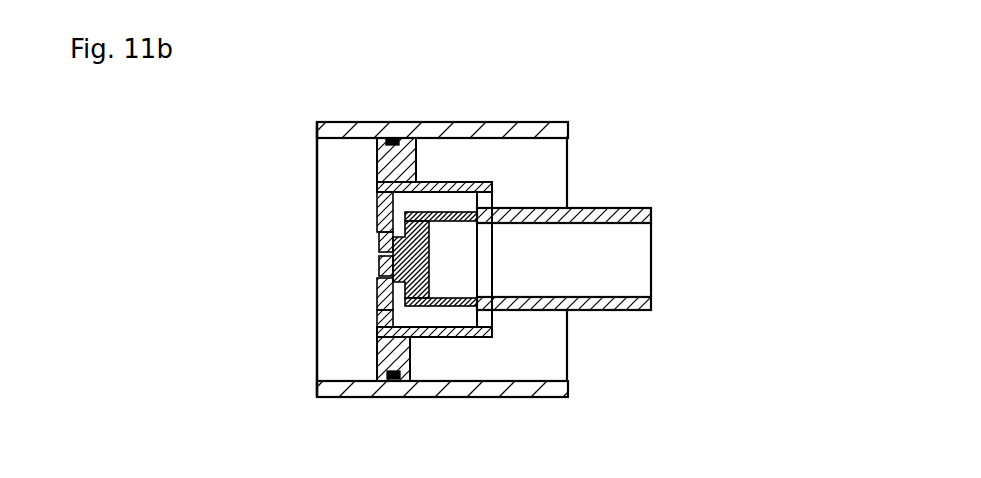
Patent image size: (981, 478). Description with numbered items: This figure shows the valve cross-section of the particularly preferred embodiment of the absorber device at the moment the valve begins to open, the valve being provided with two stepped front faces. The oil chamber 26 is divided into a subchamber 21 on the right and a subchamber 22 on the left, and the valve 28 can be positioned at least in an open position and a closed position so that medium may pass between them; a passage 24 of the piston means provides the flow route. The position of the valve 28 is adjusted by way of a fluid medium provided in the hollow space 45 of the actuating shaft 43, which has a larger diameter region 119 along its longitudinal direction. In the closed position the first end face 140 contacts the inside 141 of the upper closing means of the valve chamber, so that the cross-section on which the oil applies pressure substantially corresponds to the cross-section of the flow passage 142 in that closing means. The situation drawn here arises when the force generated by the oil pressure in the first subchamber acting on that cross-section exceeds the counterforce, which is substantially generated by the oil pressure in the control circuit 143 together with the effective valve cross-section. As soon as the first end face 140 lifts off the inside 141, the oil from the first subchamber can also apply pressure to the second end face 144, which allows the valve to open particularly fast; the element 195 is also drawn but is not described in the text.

The subchamber 21 is at (528, 152).
The subchamber 22 is at (357, 160).
The passage 24 is at (410, 213).
The oil chamber 26 is at (477, 133).
The valve 28 is at (388, 145).
The actuating shaft 43 is at (608, 310).
The hollow space 45 is at (628, 248).
The larger diameter region 119 is at (470, 338).
The first end face 140 is at (376, 210).
The inside of upper closing means 141 is at (383, 298).
The flow passage 142 is at (383, 255).
The control circuit 143 is at (382, 237).
The second end face 144 is at (383, 320).
The support 195 is at (409, 345).